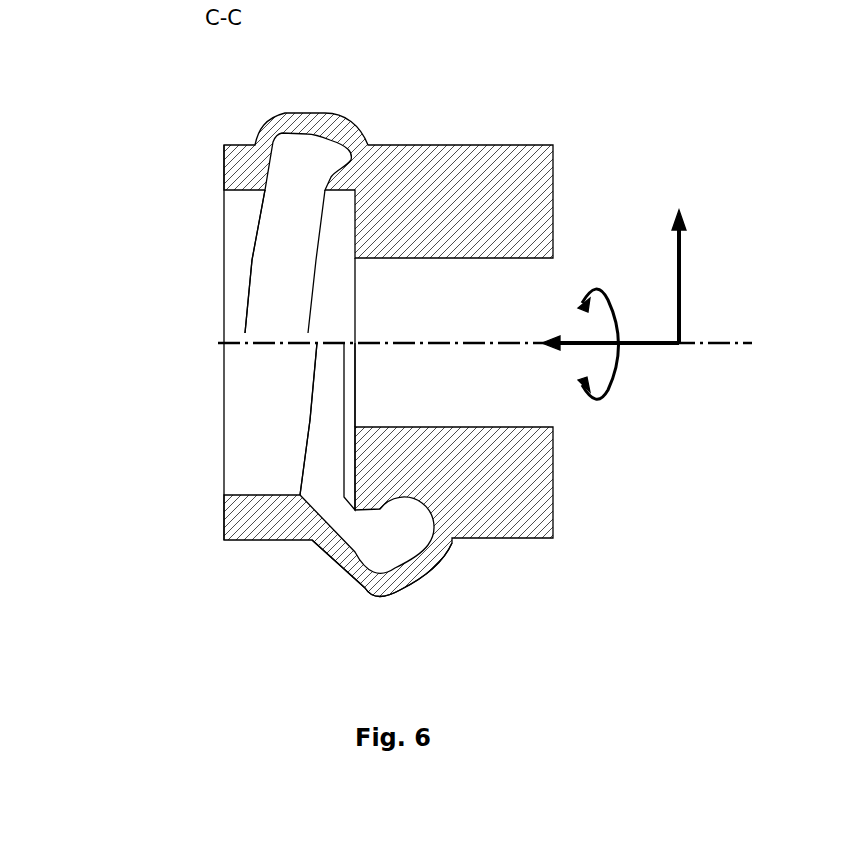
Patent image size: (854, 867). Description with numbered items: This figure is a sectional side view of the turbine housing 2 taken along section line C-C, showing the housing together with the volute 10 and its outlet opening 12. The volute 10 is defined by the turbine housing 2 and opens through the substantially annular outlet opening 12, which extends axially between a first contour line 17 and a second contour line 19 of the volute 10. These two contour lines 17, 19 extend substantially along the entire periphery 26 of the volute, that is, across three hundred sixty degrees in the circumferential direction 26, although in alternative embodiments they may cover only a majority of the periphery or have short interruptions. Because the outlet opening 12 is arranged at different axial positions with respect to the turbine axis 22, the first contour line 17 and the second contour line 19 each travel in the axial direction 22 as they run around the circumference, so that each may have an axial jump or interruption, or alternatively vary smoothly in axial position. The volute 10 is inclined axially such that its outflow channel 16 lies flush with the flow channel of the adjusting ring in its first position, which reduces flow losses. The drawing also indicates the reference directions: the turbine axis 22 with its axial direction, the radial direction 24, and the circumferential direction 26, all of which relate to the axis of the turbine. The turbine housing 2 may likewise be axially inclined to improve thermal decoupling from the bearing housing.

The turbine housing 2 is at (530, 197).
The volute 10 is at (400, 535).
The outlet opening 12 is at (278, 273).
The outflow channel 16 is at (333, 513).
The first contour line 17 is at (250, 303).
The second contour line 19 is at (313, 255).
The turbine axis 22 is at (490, 343).
The radial direction 24 is at (680, 276).
The circumferential direction 26 is at (618, 362).